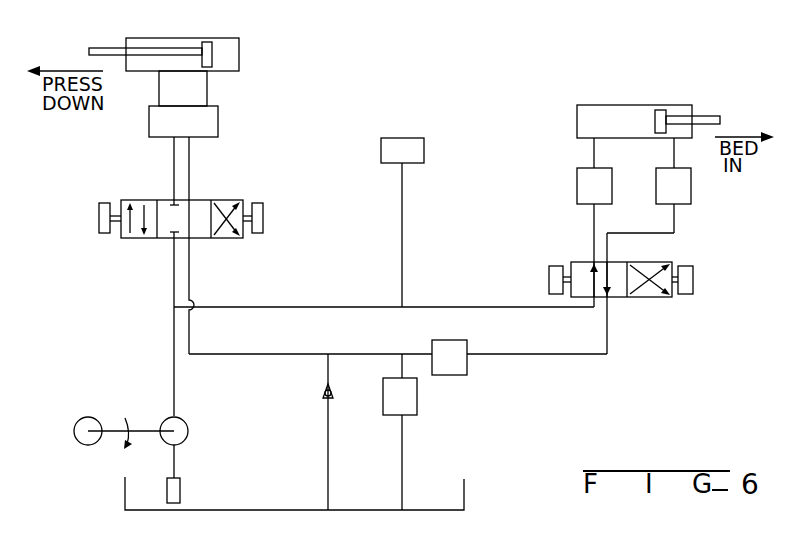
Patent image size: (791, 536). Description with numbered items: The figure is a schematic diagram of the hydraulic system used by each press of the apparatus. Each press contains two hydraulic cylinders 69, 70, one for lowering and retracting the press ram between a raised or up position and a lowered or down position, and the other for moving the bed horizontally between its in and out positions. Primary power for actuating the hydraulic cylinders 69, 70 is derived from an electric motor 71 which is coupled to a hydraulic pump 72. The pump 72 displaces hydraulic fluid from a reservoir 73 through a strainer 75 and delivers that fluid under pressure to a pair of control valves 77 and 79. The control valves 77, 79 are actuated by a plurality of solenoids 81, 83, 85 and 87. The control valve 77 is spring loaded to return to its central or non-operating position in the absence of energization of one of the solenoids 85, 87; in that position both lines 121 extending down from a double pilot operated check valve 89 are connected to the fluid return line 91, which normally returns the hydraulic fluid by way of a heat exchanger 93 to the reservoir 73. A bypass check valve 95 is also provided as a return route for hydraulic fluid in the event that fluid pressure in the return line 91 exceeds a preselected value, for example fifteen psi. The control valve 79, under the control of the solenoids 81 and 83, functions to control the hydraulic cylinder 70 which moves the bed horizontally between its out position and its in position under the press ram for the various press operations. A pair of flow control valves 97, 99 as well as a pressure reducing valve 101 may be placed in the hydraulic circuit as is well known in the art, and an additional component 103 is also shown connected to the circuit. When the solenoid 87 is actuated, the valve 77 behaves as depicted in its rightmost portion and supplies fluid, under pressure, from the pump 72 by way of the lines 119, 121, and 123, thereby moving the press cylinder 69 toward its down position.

The hydraulic cylinder 69 is at (185, 37).
The hydraulic cylinder 70 is at (618, 105).
The electric motor 71 is at (82, 445).
The hydraulic pump 72 is at (188, 438).
The reservoir 73 is at (464, 490).
The strainer 75 is at (180, 490).
The control valve 77 is at (214, 200).
The control valve 79 is at (640, 297).
The solenoid 81 is at (549, 280).
The solenoid 83 is at (693, 281).
The solenoid 85 is at (99, 220).
The solenoid 87 is at (263, 222).
The double pilot operated check valve 89 is at (218, 118).
The fluid return line 91 is at (189, 273).
The heat exchanger 93 is at (417, 398).
The bypass check valve 95 is at (320, 390).
The flow control valve 97 is at (691, 193).
The flow control valve 99 is at (577, 187).
The pressure reducing valve 101 is at (460, 339).
The accumulator 103 is at (407, 137).
The line 119 is at (174, 277).
The lines 121 is at (189, 165).
The line 123 is at (207, 85).